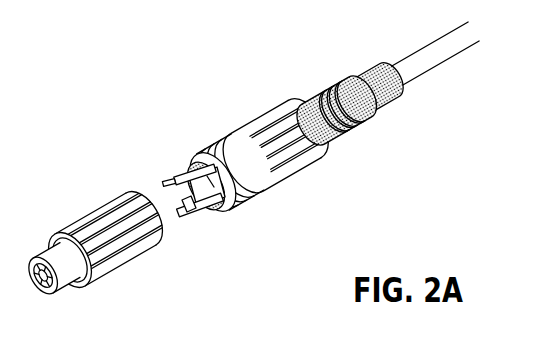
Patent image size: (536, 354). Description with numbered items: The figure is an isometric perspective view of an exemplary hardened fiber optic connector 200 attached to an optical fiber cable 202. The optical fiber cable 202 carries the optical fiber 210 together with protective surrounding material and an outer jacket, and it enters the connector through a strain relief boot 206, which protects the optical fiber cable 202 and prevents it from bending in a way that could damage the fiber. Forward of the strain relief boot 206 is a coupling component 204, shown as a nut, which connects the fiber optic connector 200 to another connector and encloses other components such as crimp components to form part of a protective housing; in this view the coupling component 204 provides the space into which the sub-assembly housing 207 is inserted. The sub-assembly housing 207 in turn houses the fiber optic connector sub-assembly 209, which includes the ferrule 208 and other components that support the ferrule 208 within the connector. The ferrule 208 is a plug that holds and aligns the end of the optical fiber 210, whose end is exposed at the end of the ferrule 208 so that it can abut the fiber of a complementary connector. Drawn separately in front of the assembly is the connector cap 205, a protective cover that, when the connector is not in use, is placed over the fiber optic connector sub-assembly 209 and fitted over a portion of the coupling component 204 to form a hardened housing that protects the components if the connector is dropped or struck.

The fiber optic connector 200 is at (104, 63).
The optical fiber cable 202 is at (448, 48).
The coupling component 204 is at (330, 155).
The connector cap 205 is at (174, 244).
The strain relief boot 206 is at (406, 98).
The sub-assembly housing 207 is at (257, 195).
The ferrule 208 is at (162, 183).
The fiber optic connector sub-assembly 209 is at (184, 161).
The optical fiber 210 is at (170, 206).